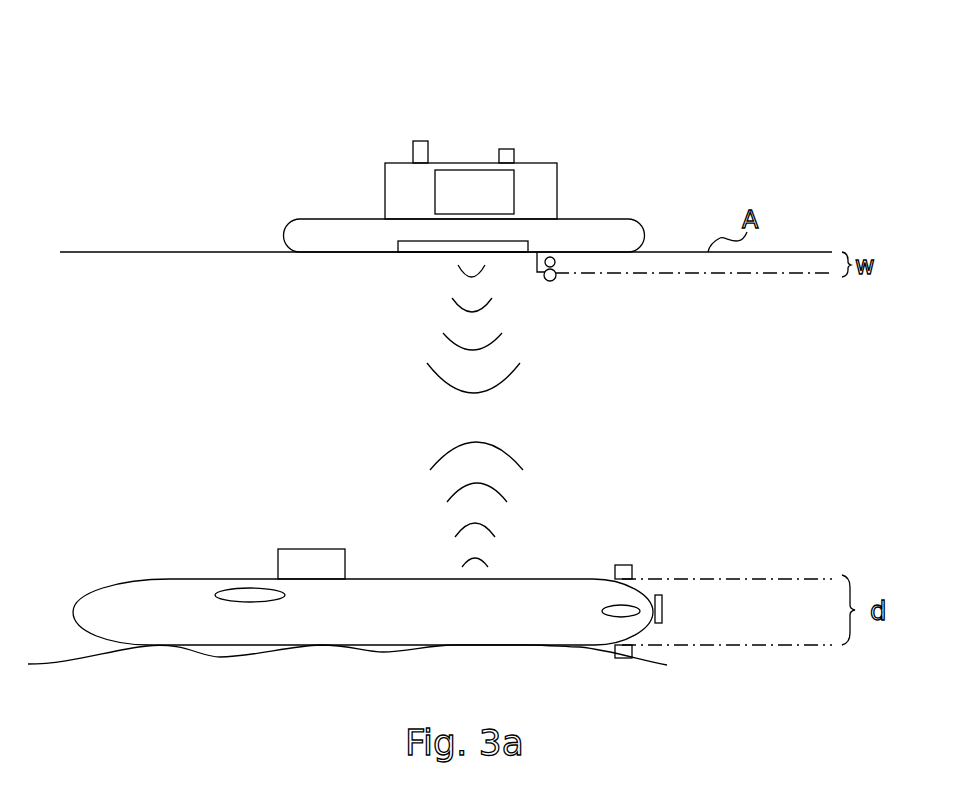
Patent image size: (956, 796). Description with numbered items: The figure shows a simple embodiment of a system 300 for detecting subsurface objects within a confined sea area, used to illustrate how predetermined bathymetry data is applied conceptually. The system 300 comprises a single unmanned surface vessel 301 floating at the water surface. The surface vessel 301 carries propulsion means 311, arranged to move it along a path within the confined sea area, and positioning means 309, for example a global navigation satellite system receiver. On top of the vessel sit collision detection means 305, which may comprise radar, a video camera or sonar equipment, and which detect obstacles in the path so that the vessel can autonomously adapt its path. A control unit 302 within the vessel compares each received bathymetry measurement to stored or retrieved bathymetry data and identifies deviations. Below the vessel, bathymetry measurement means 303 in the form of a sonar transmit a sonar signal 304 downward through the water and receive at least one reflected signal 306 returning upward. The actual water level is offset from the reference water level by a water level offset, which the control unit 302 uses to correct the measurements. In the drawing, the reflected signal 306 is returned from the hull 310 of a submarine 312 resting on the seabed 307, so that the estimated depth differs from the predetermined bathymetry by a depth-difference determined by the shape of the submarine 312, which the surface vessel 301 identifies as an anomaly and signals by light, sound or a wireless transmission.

The system 300 is at (291, 56).
The unmanned surface vessel 301 is at (379, 143).
The control unit 302 is at (435, 178).
The bathymetry measurement means 303 is at (440, 253).
The sonar signal 304 is at (418, 337).
The collision detection means 305 is at (421, 141).
The reflected signal 306 is at (416, 441).
The seabed 307 is at (50, 662).
The positioning means 309 is at (507, 149).
The hull 310 is at (553, 579).
The propulsion means 311 is at (556, 277).
The submarine 312 is at (281, 514).